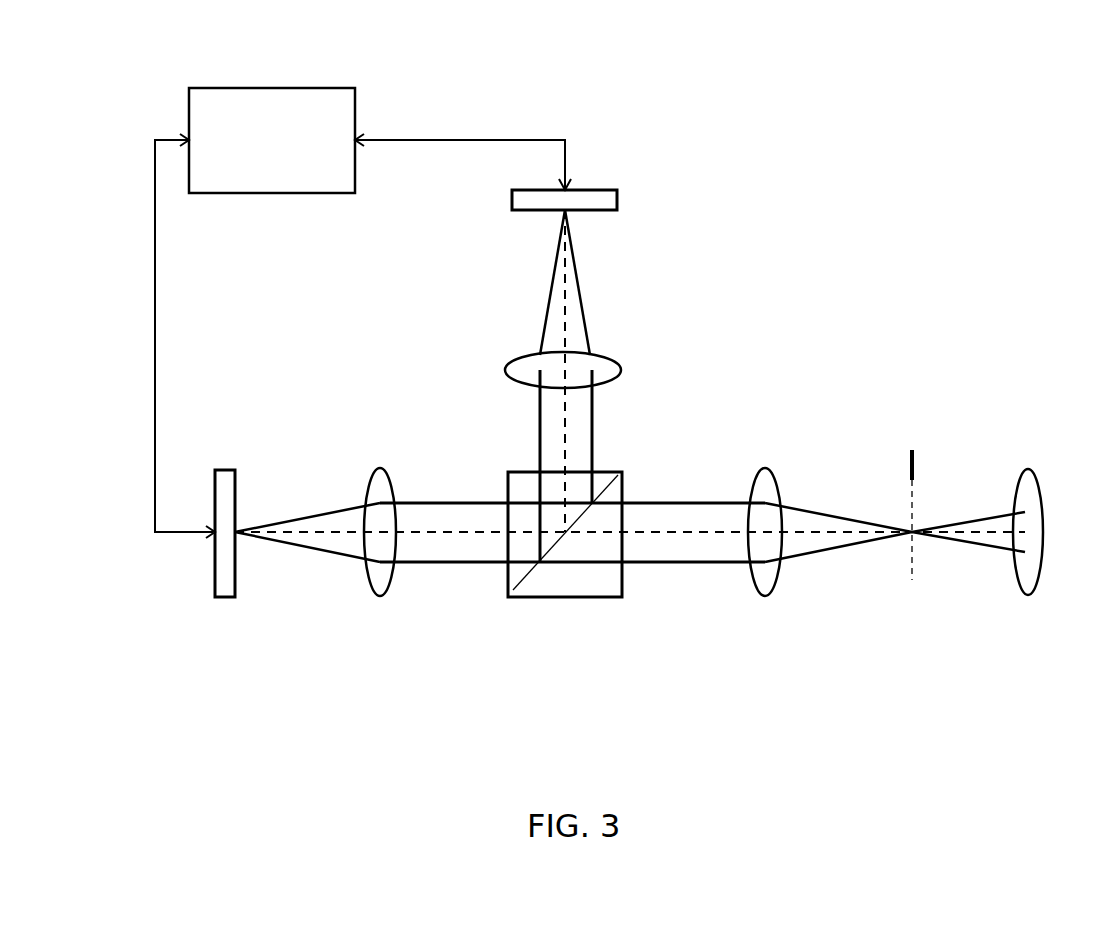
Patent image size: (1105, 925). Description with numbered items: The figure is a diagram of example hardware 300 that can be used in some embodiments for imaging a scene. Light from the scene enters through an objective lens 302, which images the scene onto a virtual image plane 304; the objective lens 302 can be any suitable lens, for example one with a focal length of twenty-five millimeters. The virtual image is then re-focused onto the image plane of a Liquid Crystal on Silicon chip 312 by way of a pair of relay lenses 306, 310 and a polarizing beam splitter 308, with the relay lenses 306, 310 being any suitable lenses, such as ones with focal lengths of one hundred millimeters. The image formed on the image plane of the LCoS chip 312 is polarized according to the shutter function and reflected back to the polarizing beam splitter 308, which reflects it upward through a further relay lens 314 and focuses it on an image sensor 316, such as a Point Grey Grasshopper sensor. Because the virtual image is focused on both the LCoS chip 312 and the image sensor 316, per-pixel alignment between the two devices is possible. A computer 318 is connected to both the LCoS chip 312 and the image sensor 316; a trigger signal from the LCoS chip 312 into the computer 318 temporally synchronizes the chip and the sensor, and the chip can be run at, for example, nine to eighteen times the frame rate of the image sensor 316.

The hardware 300 is at (907, 76).
The objective lens 302 is at (1025, 470).
The virtual image plane 304 is at (919, 499).
The relay lens 306 is at (765, 470).
The polarizing beam splitter 308 is at (628, 468).
The relay lens 310 is at (385, 470).
The Liquid Crystal on Silicon (LCoS) chip 312 is at (225, 468).
The relay lens 314 is at (505, 370).
The image sensor 316 is at (607, 190).
The computer 318 is at (275, 88).